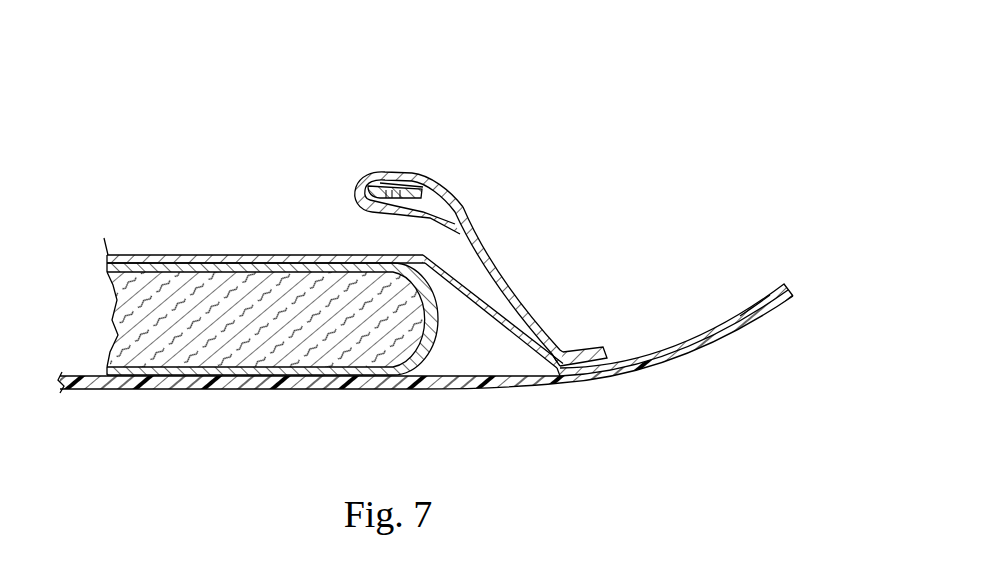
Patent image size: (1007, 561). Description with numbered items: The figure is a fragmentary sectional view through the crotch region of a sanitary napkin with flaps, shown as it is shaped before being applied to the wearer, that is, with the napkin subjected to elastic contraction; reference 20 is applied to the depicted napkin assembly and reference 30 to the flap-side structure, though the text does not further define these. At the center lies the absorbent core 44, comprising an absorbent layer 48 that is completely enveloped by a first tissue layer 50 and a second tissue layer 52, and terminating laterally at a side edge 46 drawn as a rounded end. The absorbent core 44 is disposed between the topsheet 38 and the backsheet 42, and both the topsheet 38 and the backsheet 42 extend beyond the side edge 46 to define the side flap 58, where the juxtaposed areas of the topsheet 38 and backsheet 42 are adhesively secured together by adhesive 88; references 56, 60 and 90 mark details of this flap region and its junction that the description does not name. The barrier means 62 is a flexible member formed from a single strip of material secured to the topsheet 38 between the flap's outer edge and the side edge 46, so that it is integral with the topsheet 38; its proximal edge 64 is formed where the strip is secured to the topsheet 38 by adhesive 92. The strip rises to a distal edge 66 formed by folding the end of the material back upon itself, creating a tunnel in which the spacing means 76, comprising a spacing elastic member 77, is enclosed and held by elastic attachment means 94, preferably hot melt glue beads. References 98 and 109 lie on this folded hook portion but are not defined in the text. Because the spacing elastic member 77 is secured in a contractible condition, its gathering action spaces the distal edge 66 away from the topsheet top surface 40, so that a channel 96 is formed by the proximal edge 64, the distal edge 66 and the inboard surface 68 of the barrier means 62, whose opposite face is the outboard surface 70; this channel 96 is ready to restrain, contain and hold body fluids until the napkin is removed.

The cushion assembly 20 is at (294, 288).
The rail member 30 is at (720, 356).
The topsheet 38 is at (108, 263).
The topsheet top surface 40 is at (205, 256).
The backsheet 42 is at (190, 388).
The absorbent core 44 is at (96, 308).
The side edge 46 is at (413, 362).
The absorbent layer 48 is at (108, 348).
The first tissue layer 50 is at (297, 268).
The second tissue layer 52 is at (294, 386).
The attachment region 56 is at (619, 301).
The side flap 58 is at (703, 348).
The lip 60 is at (608, 352).
The barrier means 62 is at (449, 203).
The proximal edge 64 is at (565, 345).
The distal edge 66 is at (362, 182).
The inboard surface 68 is at (457, 230).
The outboard surface 70 is at (510, 285).
The spacing means 76 is at (430, 188).
The spacing elastic member 77 is at (360, 185).
The adhesive 88 is at (760, 297).
The upper rail layer 90 is at (652, 347).
The adhesive 92 is at (557, 380).
The elastic attachment means 94 is at (393, 183).
The channel 96 is at (494, 290).
The inner wall 98 is at (463, 212).
The apex 109 is at (370, 176).